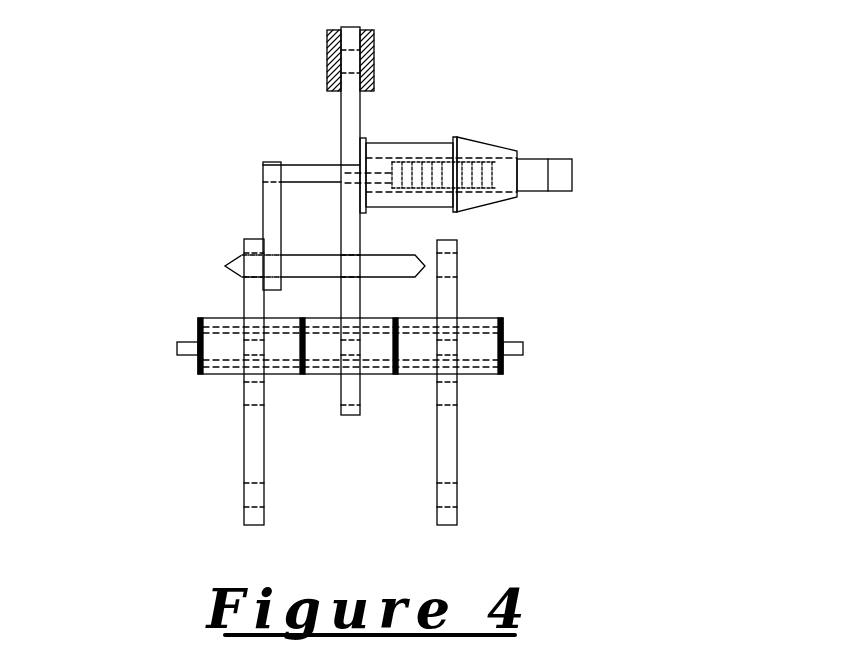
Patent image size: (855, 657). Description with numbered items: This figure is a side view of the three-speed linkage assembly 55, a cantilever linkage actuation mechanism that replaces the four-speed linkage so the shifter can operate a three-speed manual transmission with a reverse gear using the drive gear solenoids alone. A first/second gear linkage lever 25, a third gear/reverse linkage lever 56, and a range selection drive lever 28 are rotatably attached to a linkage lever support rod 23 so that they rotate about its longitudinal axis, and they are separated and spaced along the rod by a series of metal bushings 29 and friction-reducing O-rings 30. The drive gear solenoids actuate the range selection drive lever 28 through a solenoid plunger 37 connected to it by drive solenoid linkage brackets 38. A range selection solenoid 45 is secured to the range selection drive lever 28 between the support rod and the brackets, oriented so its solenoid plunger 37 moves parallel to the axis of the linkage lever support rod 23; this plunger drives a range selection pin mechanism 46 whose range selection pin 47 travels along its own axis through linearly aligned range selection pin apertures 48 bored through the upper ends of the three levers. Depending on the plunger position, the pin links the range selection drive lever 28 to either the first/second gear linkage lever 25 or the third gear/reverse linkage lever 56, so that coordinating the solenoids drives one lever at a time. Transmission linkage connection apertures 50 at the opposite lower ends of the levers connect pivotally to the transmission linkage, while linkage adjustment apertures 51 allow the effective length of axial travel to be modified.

The three-speed linkage assembly 55 is at (146, 123).
The range selection drive lever 28 is at (341, 138).
The drive solenoid linkage brackets 38 is at (327, 48).
The range selection solenoid 45 is at (412, 143).
The solenoid plunger 37 is at (292, 163).
The range selection pin mechanism 46 is at (263, 200).
The range selection pin 47 is at (392, 255).
The range selection pin aperture 48 is at (340, 254).
The first/second gear linkage lever 25 is at (244, 440).
The third gear/reverse linkage lever 56 is at (457, 455).
The linkage lever support rod 23 is at (187, 347).
The metal bushings 29 is at (222, 368).
The O-rings 30 is at (398, 341).
The linkage adjustment apertures 51 is at (264, 400).
The transmission linkage connection apertures 50 is at (244, 497).